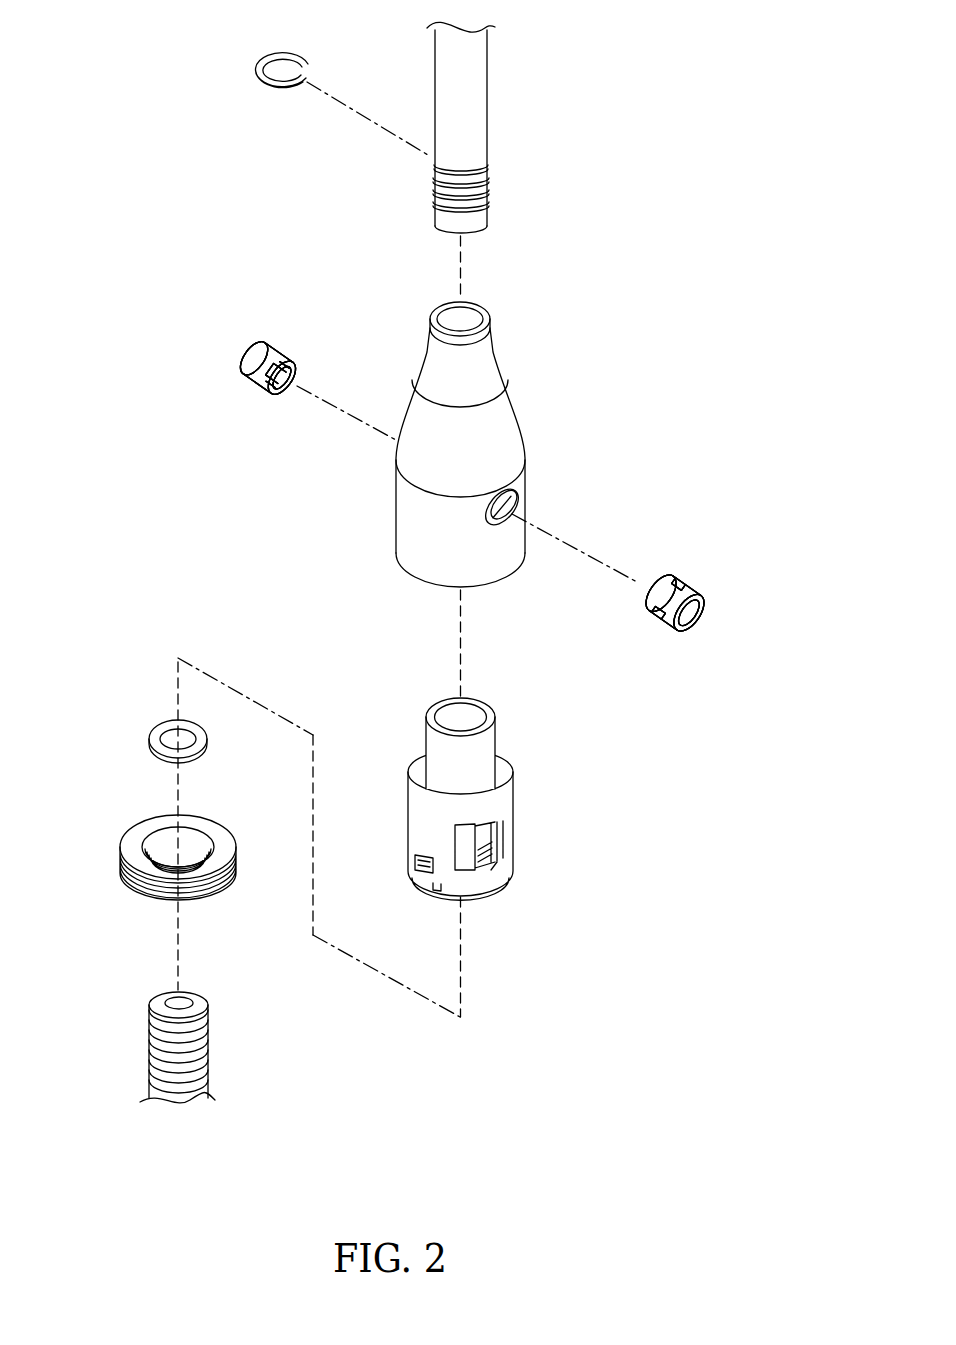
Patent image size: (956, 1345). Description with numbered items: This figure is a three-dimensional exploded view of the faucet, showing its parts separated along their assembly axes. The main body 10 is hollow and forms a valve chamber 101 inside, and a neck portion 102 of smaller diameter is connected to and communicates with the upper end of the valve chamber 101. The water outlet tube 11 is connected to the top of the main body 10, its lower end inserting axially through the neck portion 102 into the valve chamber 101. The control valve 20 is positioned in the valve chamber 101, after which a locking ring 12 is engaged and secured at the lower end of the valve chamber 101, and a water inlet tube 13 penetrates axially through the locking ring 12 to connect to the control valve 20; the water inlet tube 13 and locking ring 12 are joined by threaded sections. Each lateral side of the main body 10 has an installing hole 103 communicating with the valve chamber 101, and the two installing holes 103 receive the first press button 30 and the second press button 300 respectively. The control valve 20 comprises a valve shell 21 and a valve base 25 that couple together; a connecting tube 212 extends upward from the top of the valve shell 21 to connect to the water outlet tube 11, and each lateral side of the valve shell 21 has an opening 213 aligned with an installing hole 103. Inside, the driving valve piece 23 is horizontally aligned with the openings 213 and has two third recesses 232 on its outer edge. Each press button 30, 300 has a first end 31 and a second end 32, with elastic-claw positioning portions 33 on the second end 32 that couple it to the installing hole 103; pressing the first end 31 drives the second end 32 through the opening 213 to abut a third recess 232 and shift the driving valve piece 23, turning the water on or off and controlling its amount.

The main body 10 is at (463, 455).
The valve chamber 101 is at (480, 590).
The neck portion 102 is at (432, 314).
The installing hole 103 is at (513, 490).
The water outlet tube 11 is at (473, 72).
The locking ring 12 is at (132, 842).
The water inlet tube 13 is at (207, 1072).
The control valve 20 is at (489, 787).
The valve shell 21 is at (417, 767).
The connecting tube 212 is at (452, 712).
The opening 213 is at (457, 842).
The driving valve piece 23 is at (510, 823).
The third recess 232 is at (503, 871).
The valve base 25 is at (437, 890).
The first press button 30 is at (238, 375).
The first end 31 is at (248, 350).
The second end 32 is at (296, 390).
The positioning portion 33 is at (290, 357).
The second press button 300 is at (708, 588).